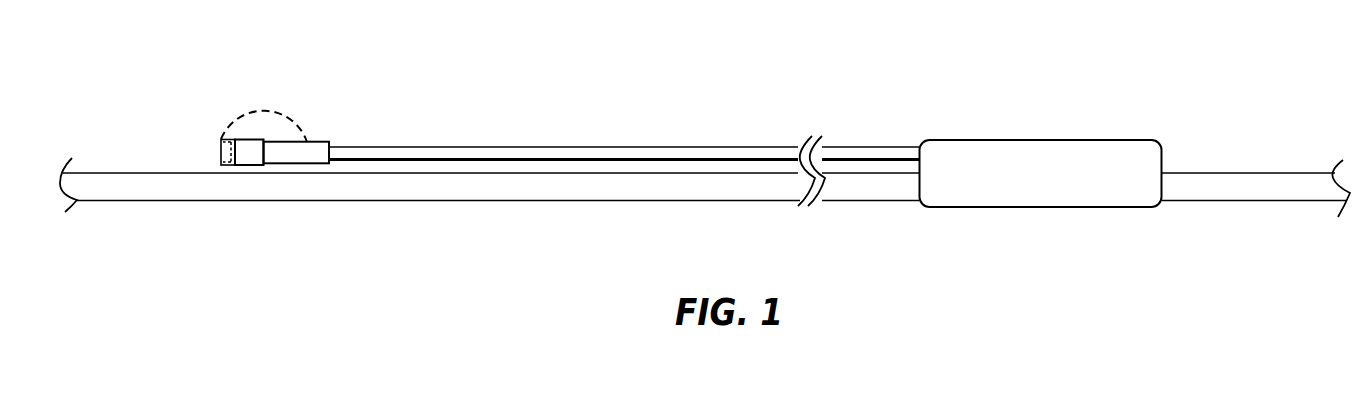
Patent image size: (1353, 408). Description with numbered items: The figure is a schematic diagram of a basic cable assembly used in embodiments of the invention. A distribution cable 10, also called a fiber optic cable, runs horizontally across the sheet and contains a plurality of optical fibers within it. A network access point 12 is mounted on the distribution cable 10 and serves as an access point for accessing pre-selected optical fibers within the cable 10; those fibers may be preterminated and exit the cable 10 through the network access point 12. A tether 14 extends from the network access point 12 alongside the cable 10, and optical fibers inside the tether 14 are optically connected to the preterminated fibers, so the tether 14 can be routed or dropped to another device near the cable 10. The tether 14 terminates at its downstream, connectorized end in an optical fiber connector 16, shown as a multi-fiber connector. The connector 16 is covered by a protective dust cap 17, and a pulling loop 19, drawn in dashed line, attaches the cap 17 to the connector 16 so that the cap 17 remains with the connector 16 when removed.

The distribution cable 10 is at (118, 172).
The network access point 12 is at (1038, 140).
The tether 14 is at (547, 147).
The optical fiber connector 16 is at (250, 140).
The protective dust cap 17 is at (231, 166).
The pulling loop 19 is at (297, 122).